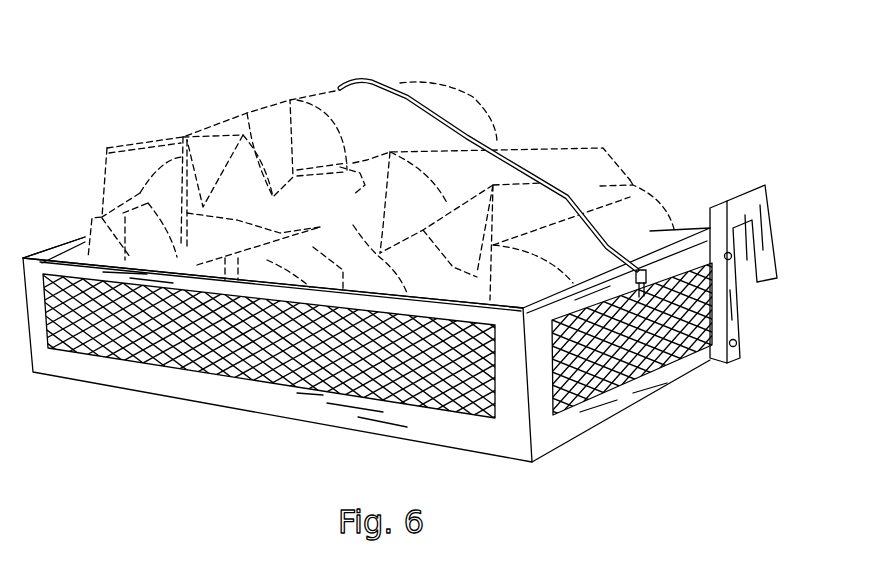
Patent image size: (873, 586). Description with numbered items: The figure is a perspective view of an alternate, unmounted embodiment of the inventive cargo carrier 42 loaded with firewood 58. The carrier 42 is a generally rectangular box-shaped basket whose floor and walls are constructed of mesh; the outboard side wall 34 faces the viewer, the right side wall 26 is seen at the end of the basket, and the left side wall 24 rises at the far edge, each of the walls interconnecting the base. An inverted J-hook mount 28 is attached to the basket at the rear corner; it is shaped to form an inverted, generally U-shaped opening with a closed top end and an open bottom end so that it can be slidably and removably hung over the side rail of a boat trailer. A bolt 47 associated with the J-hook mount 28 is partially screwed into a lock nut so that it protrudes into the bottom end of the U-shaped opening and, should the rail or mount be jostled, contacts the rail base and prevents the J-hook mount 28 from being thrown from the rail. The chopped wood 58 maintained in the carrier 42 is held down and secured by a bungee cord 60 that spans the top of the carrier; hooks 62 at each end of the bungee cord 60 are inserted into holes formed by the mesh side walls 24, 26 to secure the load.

The left side wall 24 is at (66, 248).
The right side wall 26 is at (607, 415).
The J-hook mount 28 is at (770, 205).
The outboard side wall 34 is at (267, 408).
The cargo carrier 42 is at (141, 436).
The bolt 47 is at (735, 268).
The firewood 58 is at (145, 90).
The bungee cord 60 is at (447, 115).
The hooks 62 is at (677, 233).